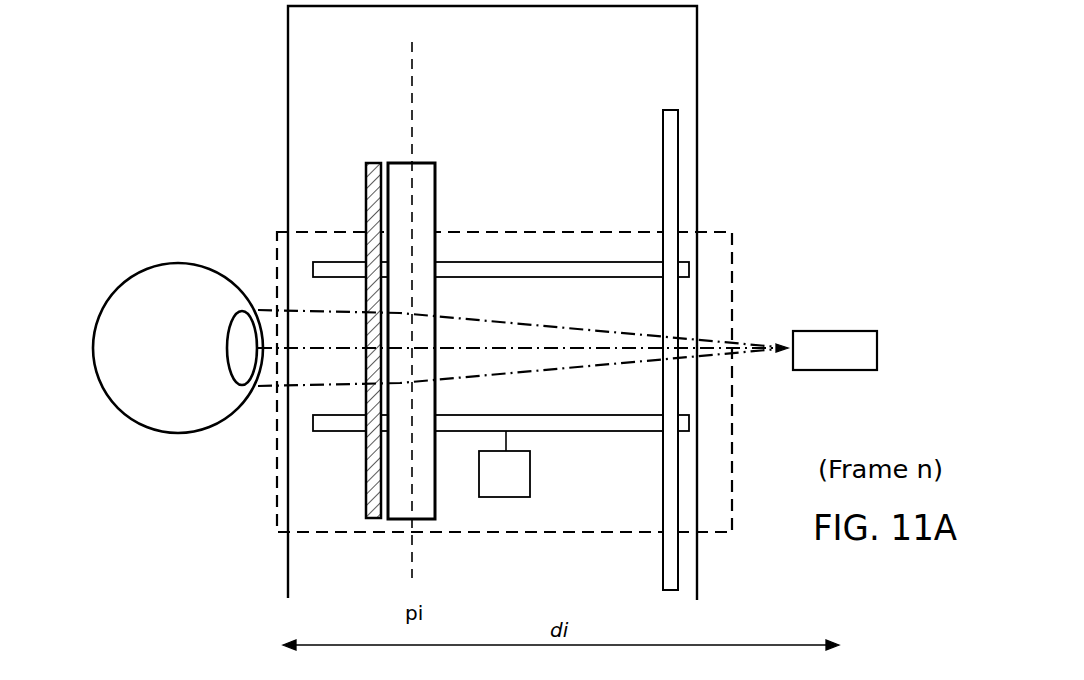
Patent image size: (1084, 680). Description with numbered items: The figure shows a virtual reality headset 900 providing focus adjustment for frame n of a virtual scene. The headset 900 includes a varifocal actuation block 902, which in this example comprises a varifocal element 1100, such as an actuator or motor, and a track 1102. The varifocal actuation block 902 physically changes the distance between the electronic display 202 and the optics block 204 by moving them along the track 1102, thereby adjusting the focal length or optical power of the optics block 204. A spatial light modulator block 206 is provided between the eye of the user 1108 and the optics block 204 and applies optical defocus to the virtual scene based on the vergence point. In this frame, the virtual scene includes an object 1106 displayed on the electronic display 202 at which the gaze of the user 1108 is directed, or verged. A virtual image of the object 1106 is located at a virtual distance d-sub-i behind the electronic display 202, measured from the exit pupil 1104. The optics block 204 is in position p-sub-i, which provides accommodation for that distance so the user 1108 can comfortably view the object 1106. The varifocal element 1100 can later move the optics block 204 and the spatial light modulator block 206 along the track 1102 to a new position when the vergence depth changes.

The virtual reality headset 900 is at (697, 40).
The varifocal actuation block 902 is at (277, 261).
The electronic display 202 is at (673, 142).
The optics block 204 is at (419, 161).
The spatial light modulator block 206 is at (366, 163).
The varifocal element 1100 is at (507, 477).
The track 1102 is at (637, 427).
The exit pupil 1104 is at (266, 416).
The object 1106 is at (831, 331).
The user 1108 is at (105, 307).